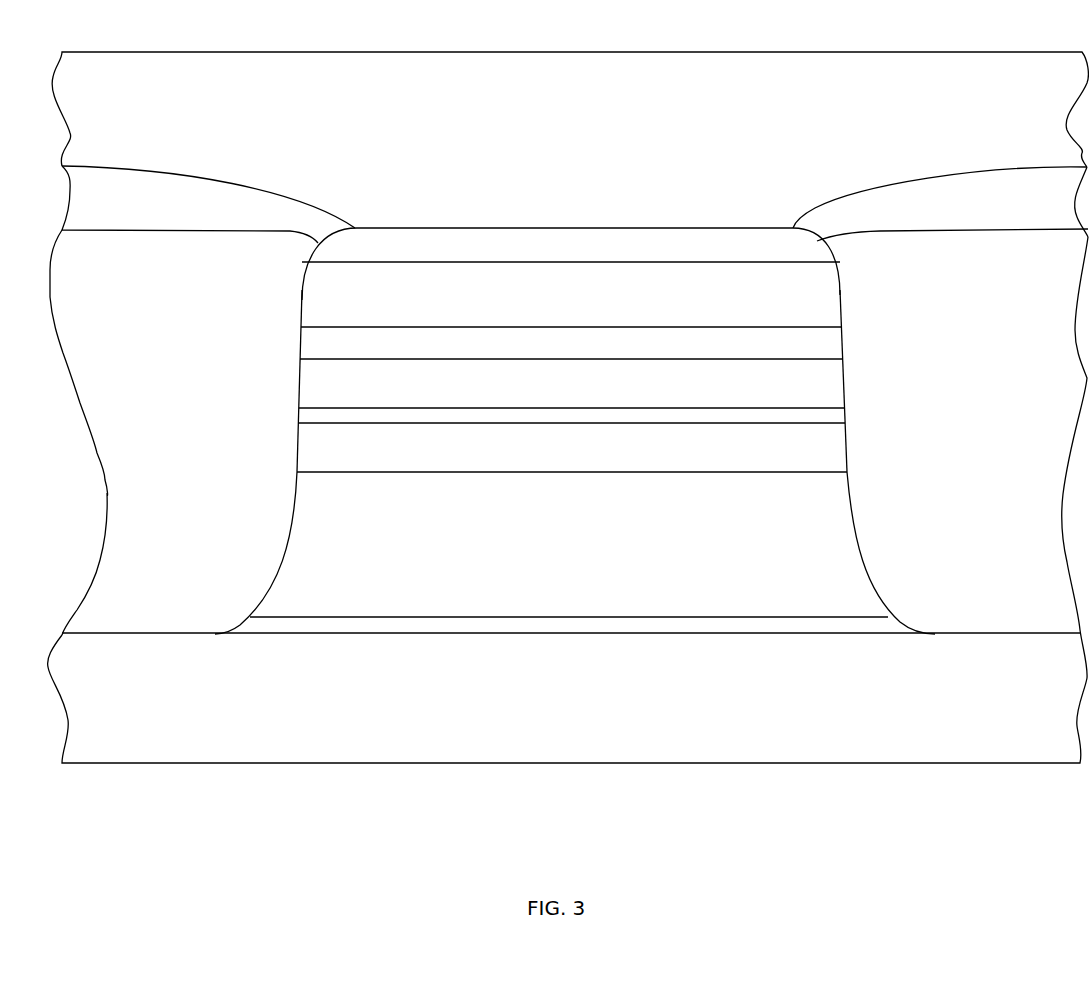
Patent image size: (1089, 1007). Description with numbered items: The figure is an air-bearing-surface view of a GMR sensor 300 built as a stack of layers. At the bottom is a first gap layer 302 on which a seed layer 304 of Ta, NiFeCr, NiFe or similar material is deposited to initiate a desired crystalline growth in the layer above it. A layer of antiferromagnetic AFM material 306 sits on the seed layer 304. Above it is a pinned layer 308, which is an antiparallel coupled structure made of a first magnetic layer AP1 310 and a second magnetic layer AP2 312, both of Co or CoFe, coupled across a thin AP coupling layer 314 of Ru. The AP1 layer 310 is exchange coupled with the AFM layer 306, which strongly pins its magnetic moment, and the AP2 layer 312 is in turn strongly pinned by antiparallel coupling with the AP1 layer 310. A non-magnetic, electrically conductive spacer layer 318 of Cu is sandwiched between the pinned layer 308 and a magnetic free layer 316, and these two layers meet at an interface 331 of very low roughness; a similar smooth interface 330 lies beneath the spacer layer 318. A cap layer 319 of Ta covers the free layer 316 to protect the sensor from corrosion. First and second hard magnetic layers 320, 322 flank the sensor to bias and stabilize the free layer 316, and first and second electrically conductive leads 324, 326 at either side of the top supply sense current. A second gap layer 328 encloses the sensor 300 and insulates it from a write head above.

The GMR sensor 300 is at (655, 38).
The first gap layer 302 is at (560, 699).
The seed layer 304 is at (683, 625).
The antiferromagnetic (AFM) layer 306 is at (537, 556).
The pinned layer 308 is at (857, 472).
The first magnetic layer (AP1) 310 is at (537, 450).
The second magnetic layer (AP2) 312 is at (537, 387).
The AP coupling layer 314 is at (667, 418).
The magnetic free layer 316 is at (537, 297).
The spacer layer 318 is at (537, 345).
The cap layer 319 is at (537, 249).
The first hard magnetic layer 320 is at (936, 304).
The second hard magnetic layer 322 is at (130, 376).
The first electrically conductive lead 324 is at (945, 195).
The second electrically conductive lead 326 is at (101, 199).
The second gap layer 328 is at (538, 149).
The lower interface 330 is at (405, 359).
The interface 331 is at (415, 327).